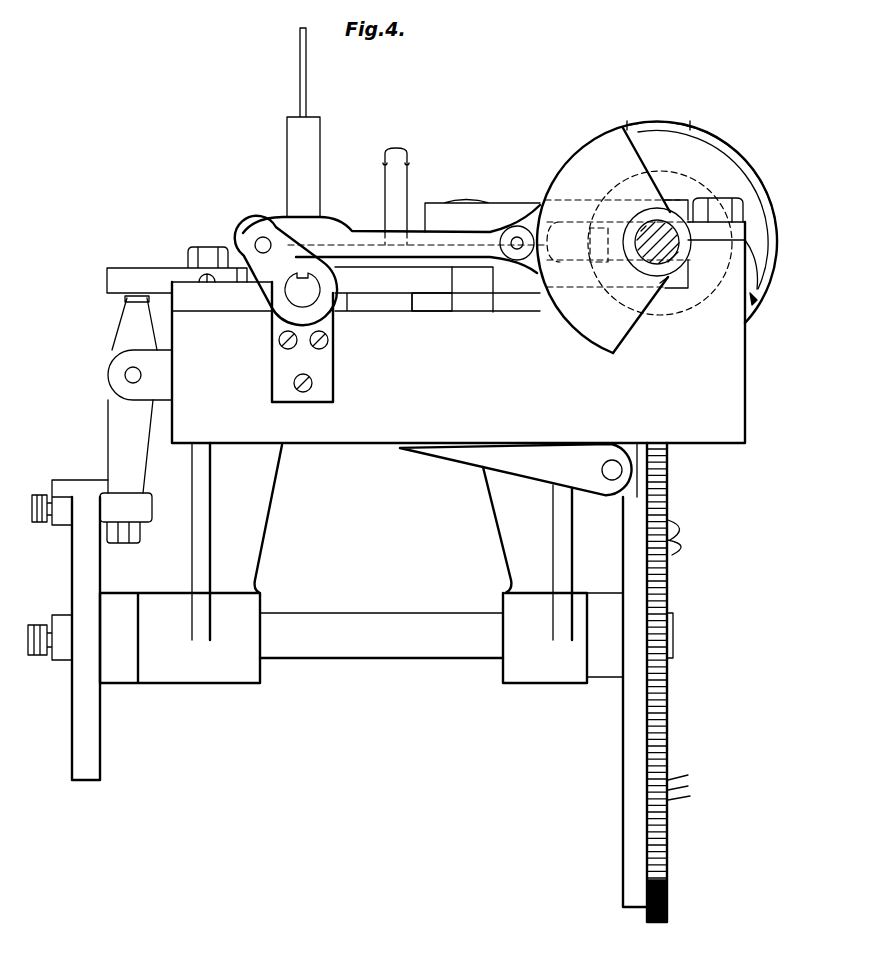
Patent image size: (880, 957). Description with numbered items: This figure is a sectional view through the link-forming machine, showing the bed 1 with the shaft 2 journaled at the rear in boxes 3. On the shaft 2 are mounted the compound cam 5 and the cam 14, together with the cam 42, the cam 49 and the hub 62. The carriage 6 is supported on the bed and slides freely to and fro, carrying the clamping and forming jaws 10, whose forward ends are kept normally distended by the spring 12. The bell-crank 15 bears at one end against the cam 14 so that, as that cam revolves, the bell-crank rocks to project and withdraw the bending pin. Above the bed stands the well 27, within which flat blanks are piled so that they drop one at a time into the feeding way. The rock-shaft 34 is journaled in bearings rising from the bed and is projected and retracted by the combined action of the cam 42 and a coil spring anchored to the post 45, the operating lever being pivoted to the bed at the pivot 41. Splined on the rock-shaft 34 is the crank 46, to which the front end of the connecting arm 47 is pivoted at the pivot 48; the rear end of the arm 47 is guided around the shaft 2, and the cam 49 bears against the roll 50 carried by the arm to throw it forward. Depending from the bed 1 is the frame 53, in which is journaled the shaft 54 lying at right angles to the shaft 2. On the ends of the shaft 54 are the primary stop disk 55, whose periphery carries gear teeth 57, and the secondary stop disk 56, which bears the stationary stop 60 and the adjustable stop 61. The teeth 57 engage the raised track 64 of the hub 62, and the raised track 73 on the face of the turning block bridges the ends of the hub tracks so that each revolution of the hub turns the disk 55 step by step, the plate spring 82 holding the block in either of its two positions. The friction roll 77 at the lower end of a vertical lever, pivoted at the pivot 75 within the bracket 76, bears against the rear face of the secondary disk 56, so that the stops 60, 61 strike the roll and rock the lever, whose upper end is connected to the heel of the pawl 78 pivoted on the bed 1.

The bed 1 is at (458, 332).
The shaft 2 is at (677, 253).
The boxes 3 is at (662, 277).
The compound cam 5 is at (755, 280).
The carriage 6 is at (427, 305).
The clamping and forming jaws 10 is at (393, 280).
The spring 12 is at (433, 207).
The cam 14 is at (127, 325).
The bell-crank 15 is at (432, 453).
The well 27 is at (313, 182).
The rock-shaft 34 is at (302, 290).
The pivot 41 is at (472, 289).
The cam 42 is at (703, 197).
The post 45 is at (400, 177).
The crank 46 is at (286, 270).
The connecting arm 47 is at (395, 239).
The pivot 48 is at (255, 247).
The cam 49 is at (657, 237).
The roll 50 is at (512, 235).
The frame 53 is at (253, 550).
The shaft 54 is at (350, 620).
The primary stop disk 55 is at (657, 608).
The secondary stop disk 56 is at (95, 765).
The gear teeth 57 is at (688, 657).
The stop 60 is at (73, 485).
The stop 61 is at (53, 615).
The hub 62 is at (703, 210).
The raised track 64 is at (727, 140).
The raised track 73 is at (657, 122).
The pivot 75 is at (125, 377).
The bracket 76 is at (167, 383).
The friction roll 77 is at (143, 510).
The pawl 78 is at (122, 272).
The plate spring 82 is at (757, 228).